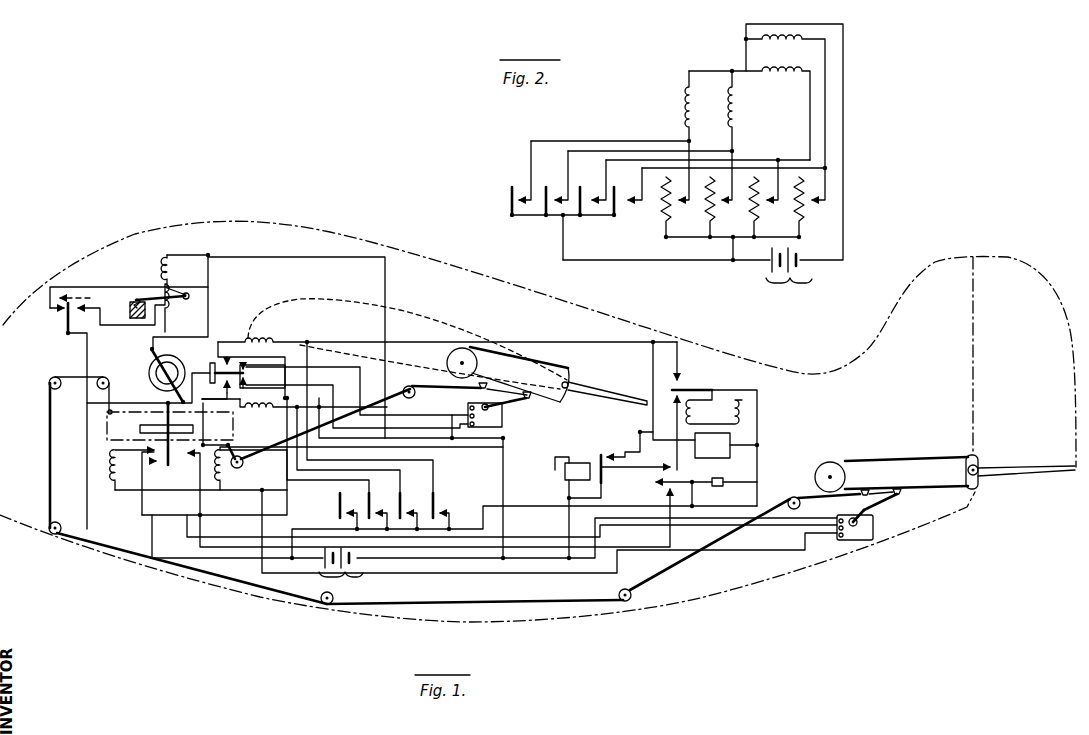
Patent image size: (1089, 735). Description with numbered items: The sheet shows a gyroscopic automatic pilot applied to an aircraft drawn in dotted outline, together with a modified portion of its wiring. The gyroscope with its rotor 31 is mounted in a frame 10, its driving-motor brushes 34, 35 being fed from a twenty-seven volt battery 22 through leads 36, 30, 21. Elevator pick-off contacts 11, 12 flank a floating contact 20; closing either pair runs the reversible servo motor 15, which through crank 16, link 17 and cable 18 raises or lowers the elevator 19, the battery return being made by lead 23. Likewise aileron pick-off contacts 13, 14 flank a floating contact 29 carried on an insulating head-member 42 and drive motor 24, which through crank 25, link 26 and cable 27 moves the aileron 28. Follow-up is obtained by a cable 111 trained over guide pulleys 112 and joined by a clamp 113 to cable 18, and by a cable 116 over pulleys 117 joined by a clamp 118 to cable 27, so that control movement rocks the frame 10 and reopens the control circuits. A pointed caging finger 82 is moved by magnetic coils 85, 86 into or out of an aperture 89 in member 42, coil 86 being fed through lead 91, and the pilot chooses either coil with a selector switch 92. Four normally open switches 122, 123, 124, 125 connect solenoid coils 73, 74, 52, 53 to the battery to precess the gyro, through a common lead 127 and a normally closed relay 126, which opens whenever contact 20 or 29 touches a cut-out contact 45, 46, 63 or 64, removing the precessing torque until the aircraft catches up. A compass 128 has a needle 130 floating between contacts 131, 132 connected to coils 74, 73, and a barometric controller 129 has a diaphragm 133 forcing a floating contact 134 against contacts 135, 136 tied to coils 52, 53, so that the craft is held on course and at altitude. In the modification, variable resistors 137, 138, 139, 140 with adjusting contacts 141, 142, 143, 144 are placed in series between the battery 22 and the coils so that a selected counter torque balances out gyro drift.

In FIG. 1, the frame 10 is at (107, 422).
In FIG. 1, the pick-off contact 11 is at (152, 462).
In FIG. 1, the pick-off contact 12 is at (182, 463).
In FIG. 1, the pick-off contact 13 is at (258, 383).
In FIG. 1, the pick-off contact 14 is at (355, 389).
In FIG. 1, the servo motor 15 is at (862, 540).
In FIG. 1, the crank 16 is at (866, 517).
In FIG. 1, the link 17 is at (897, 500).
In FIG. 1, the cable 18 is at (931, 485).
In FIG. 1, the elevator 19 is at (1028, 470).
In FIG. 1, the floating contact 20 is at (178, 468).
In FIG. 1, the lead 21 is at (87, 473).
In FIG. 2, the battery 22 is at (789, 275).
In FIG. 1, the battery 22 is at (338, 578).
In FIG. 1, the lead 23 is at (410, 562).
In FIG. 1, the reversible control motor 24 is at (505, 417).
In FIG. 1, the crank 25 is at (523, 400).
In FIG. 1, the link 26 is at (529, 398).
In FIG. 1, the cable 27 is at (550, 366).
In FIG. 1, the aileron 28 is at (603, 392).
In FIG. 1, the floating contact 29 is at (227, 357).
In FIG. 1, the lead 30 is at (300, 257).
In FIG. 1, the rotor 31 is at (175, 364).
In FIG. 1, the motor brush 34 is at (152, 352).
In FIG. 1, the motor brush 35 is at (150, 377).
In FIG. 1, the lead 36 is at (209, 268).
In FIG. 1, the head-member 42 is at (130, 310).
In FIG. 1, the cut-out contact 45 is at (227, 398).
In FIG. 1, the cut-out contact 46 is at (255, 338).
In FIG. 2, the solenoid coil 52 is at (779, 77).
In FIG. 1, the solenoid coil 52 is at (268, 418).
In FIG. 2, the solenoid coil 53 is at (793, 43).
In FIG. 1, the solenoid coil 53 is at (273, 341).
In FIG. 1, the cut-out contact 63 is at (148, 451).
In FIG. 1, the cut-out contact 64 is at (188, 458).
In FIG. 2, the solenoid coil 73 is at (684, 118).
In FIG. 1, the solenoid coil 73 is at (114, 461).
In FIG. 2, the solenoid coil 74 is at (737, 125).
In FIG. 1, the solenoid coil 74 is at (222, 477).
In FIG. 1, the pointed finger 82 is at (186, 292).
In FIG. 1, the magnetic coil 85 is at (170, 321).
In FIG. 1, the magnetic coil 86 is at (162, 271).
In FIG. 1, the aperture 89 is at (133, 300).
In FIG. 1, the lead 91 is at (96, 290).
In FIG. 1, the selector switch 92 is at (64, 326).
In FIG. 1, the cable 111 is at (48, 432).
In FIG. 1, the guide pulleys 112 is at (75, 392).
In FIG. 1, the clamp 113 is at (865, 490).
In FIG. 1, the cable 116 is at (406, 389).
In FIG. 1, the guide pulleys 117 is at (240, 469).
In FIG. 1, the clamp 118 is at (482, 385).
In FIG. 2, the switch 122 is at (522, 190).
In FIG. 1, the switch 122 is at (356, 512).
In FIG. 2, the switch 123 is at (556, 190).
In FIG. 1, the switch 123 is at (385, 512).
In FIG. 2, the switch 124 is at (592, 190).
In FIG. 1, the switch 124 is at (416, 512).
In FIG. 2, the switch 125 is at (626, 190).
In FIG. 1, the switch 125 is at (450, 512).
In FIG. 1, the magnetic relay unit 126 is at (582, 463).
In FIG. 1, the common lead 127 is at (540, 462).
In FIG. 1, the compass 128 is at (728, 471).
In FIG. 1, the barometric controller 129 is at (734, 383).
In FIG. 1, the needle 130 is at (730, 441).
In FIG. 1, the contact 131 is at (635, 467).
In FIG. 1, the contact 132 is at (665, 492).
In FIG. 1, the pressure responsive diaphragm 133 is at (742, 404).
In FIG. 1, the floating contact 134 is at (690, 386).
In FIG. 1, the contact 135 is at (675, 378).
In FIG. 1, the contact 136 is at (674, 404).
In FIG. 2, the variable resistor 137 is at (660, 222).
In FIG. 2, the variable resistor 138 is at (705, 223).
In FIG. 2, the variable resistor 139 is at (750, 223).
In FIG. 2, the variable resistor 140 is at (801, 222).
In FIG. 2, the adjusting contact 141 is at (680, 196).
In FIG. 2, the adjusting contact 142 is at (724, 196).
In FIG. 2, the adjusting contact 143 is at (766, 196).
In FIG. 2, the adjusting contact 144 is at (812, 200).